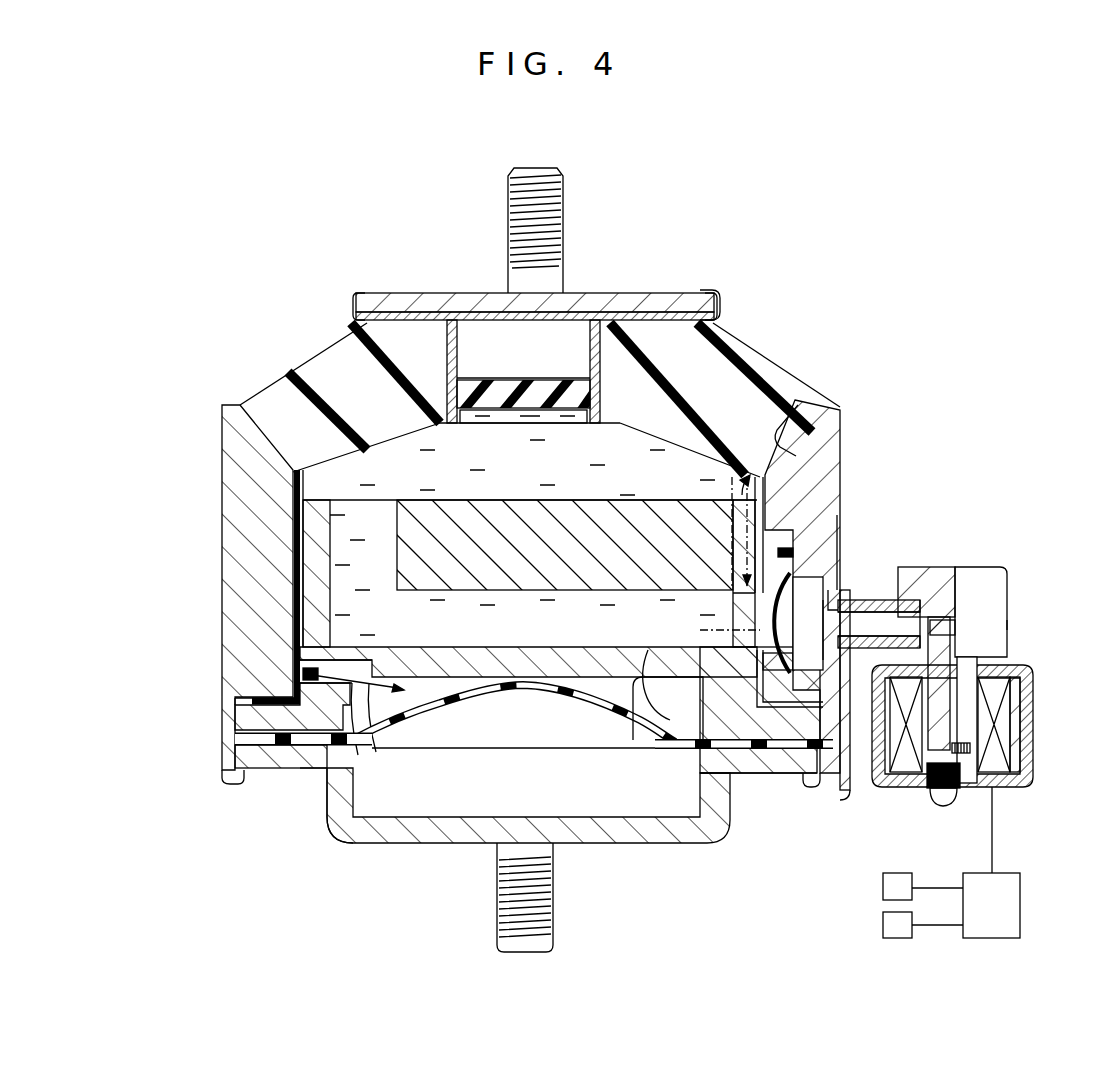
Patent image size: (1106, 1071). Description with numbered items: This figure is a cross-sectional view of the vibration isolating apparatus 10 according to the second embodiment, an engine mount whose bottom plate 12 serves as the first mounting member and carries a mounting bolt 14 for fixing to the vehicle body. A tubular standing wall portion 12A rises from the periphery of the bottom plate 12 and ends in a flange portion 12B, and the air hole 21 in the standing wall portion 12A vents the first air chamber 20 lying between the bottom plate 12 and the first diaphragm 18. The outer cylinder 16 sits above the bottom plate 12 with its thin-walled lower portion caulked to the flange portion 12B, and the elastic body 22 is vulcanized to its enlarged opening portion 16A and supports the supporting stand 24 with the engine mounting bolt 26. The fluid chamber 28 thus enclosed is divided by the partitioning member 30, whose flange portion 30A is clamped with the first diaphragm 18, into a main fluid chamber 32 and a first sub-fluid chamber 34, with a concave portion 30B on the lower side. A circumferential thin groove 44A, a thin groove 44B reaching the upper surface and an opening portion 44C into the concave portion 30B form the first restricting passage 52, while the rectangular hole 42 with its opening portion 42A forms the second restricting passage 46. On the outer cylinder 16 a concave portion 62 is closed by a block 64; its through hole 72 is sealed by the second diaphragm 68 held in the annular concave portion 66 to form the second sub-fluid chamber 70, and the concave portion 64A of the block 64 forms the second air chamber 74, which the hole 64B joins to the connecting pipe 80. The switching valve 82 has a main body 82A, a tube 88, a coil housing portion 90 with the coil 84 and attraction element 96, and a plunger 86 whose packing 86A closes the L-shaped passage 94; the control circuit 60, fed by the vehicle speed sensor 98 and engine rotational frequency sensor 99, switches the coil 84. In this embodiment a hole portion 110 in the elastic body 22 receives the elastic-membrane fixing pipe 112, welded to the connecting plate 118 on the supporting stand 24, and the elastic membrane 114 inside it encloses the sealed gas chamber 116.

The vibration isolating apparatus 10 is at (750, 234).
The bottom plate 12 is at (403, 845).
The standing wall portion 12A is at (326, 802).
The flange portion 12B is at (277, 774).
The mounting bolt 14 is at (497, 880).
The outer cylinder 16 is at (222, 478).
The enlarged opening portion 16A is at (790, 416).
The first diaphragm 18 is at (607, 722).
The first air chamber 20 is at (537, 732).
The air hole 21 is at (320, 784).
The elastic body 22 is at (393, 450).
The supporting stand 24 is at (425, 293).
The mounting bolt 26 is at (508, 232).
The fluid chamber 28 is at (400, 456).
The partitioning member 30 is at (318, 554).
The flange portion 30A is at (247, 717).
The concave portion 30B is at (693, 716).
The main fluid chamber 32 is at (534, 473).
The first sub-fluid chamber 34 is at (679, 715).
The rectangular hole 42 is at (632, 660).
The opening portion 42A is at (397, 510).
The thin groove 44A is at (722, 668).
The thin groove 44B is at (722, 489).
The opening portion 44C is at (366, 736).
The second restricting passage 46 is at (414, 625).
The first restricting passage 52 is at (758, 762).
The control circuit 60 is at (1020, 908).
The concave portion 62 is at (837, 515).
The block 64 is at (845, 712).
The concave portion 64A is at (845, 752).
The hole 64B is at (875, 603).
The annular concave portion 66 is at (785, 560).
The second diaphragm 68 is at (835, 593).
The second sub-fluid chamber 70 is at (795, 702).
The through hole 72 is at (742, 586).
The second air chamber 74 is at (822, 702).
The connecting pipe 80 is at (886, 582).
The switching valve 82 is at (1013, 557).
The main body 82A is at (1007, 626).
The coil 84 is at (1000, 736).
The plunger 86 is at (1007, 643).
The packing 86A is at (952, 619).
The tube 88 is at (960, 699).
The coil housing portion 90 is at (1025, 771).
The L-shaped passage 94 is at (888, 636).
The attraction element 96 is at (930, 763).
The vehicle speed sensor 98 is at (883, 887).
The engine rotational frequency sensor 99 is at (883, 926).
The hole portion 110 is at (455, 345).
The elastic-membrane fixing pipe 112 is at (597, 378).
The elastic membrane 114 is at (548, 378).
The gas chamber 116 is at (526, 355).
The connecting plate 118 is at (720, 298).